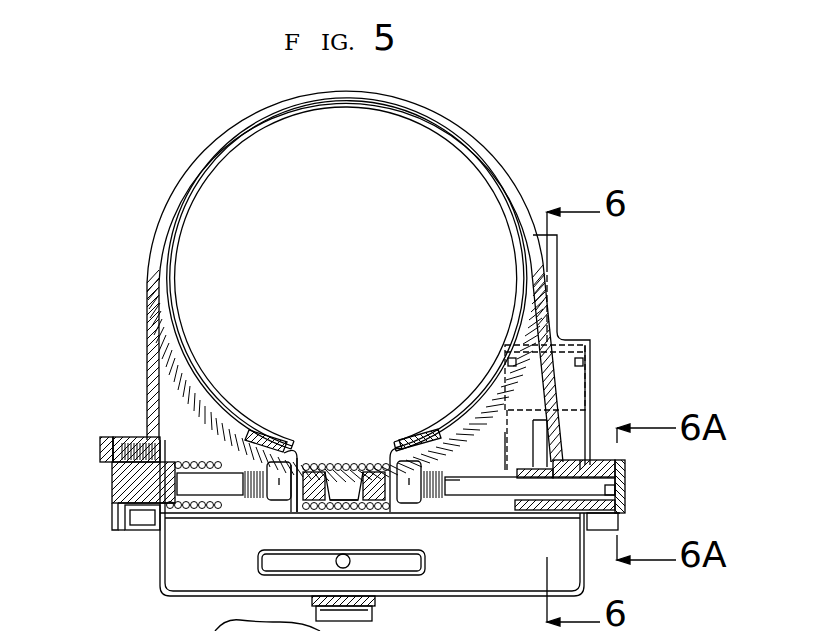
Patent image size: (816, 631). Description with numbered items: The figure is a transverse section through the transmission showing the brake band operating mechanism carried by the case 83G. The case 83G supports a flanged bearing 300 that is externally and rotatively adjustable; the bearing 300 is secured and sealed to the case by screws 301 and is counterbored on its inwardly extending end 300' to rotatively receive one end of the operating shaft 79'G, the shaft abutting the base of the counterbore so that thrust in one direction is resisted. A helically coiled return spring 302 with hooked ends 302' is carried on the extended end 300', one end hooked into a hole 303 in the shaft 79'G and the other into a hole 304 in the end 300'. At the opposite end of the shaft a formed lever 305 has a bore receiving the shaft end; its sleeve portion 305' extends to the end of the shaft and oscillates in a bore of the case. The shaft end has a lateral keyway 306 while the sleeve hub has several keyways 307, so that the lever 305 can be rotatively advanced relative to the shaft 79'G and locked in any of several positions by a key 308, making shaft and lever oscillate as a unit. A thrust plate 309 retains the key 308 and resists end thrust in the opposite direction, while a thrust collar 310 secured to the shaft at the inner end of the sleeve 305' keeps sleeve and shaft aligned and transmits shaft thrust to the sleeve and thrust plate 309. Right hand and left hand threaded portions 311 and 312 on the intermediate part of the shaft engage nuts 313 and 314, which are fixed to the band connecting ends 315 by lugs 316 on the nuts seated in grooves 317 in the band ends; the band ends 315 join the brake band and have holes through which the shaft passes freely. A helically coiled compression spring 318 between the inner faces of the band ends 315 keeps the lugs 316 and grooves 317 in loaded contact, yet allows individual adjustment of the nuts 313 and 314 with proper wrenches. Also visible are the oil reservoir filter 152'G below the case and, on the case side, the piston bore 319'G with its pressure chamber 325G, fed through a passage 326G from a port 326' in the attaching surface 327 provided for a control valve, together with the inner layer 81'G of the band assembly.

The case 83G is at (150, 318).
The gasket inner layer 81'G is at (346, 274).
The band connecting ends 315 is at (303, 440).
The helically coiled compression spring 318 is at (347, 467).
The grooves 317 is at (305, 490).
The lugs 316 is at (267, 490).
The left hand threaded portion 312 is at (420, 482).
The nut 314 is at (432, 497).
The operating shaft 79'G is at (215, 471).
The nut 313 is at (265, 458).
The right hand threaded portion 311 is at (275, 475).
The filter 152'G is at (372, 535).
The flanged bearing 300 is at (79, 418).
The screws 301 is at (103, 440).
The hooked ends 302' is at (165, 474).
The hole 303 is at (232, 508).
The hole 304 is at (128, 500).
The helically coiled return spring 302 is at (110, 546).
The inwardly extending end 300' is at (97, 560).
The port 326' is at (619, 279).
The passage 326G is at (560, 308).
The attaching surface 327 is at (565, 330).
The pressure chamber 325G is at (577, 345).
The bore 319'G is at (613, 365).
The sleeve portion 305' is at (617, 409).
The lever 305 is at (473, 412).
The thrust collar 310 is at (508, 463).
The keyways 307 is at (600, 460).
The key 308 is at (627, 488).
The lateral keyway 306 is at (627, 501).
The thrust plate 309 is at (615, 496).